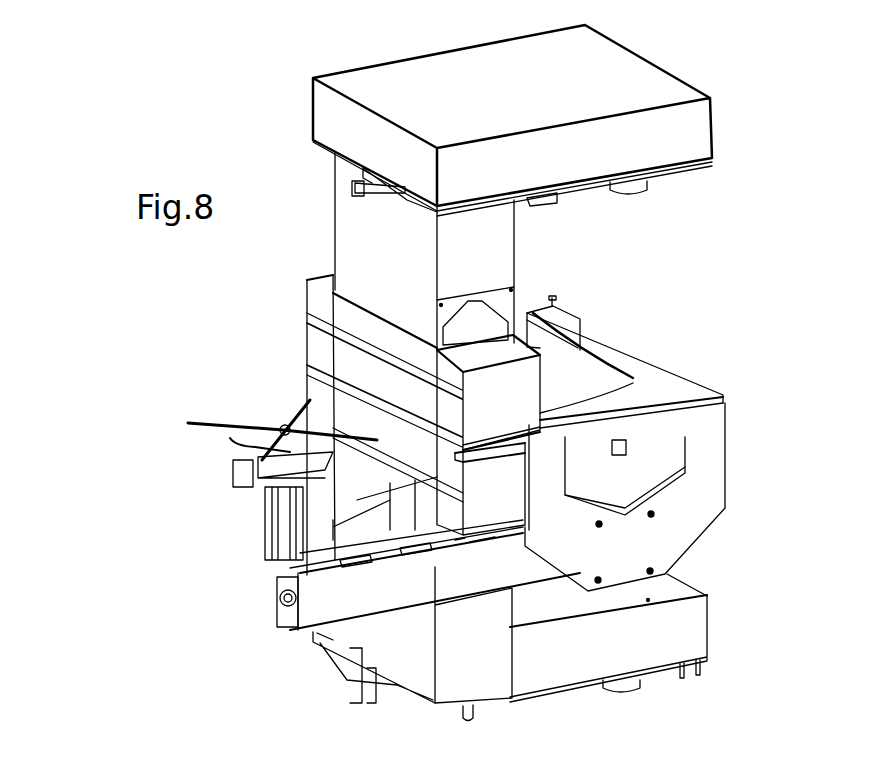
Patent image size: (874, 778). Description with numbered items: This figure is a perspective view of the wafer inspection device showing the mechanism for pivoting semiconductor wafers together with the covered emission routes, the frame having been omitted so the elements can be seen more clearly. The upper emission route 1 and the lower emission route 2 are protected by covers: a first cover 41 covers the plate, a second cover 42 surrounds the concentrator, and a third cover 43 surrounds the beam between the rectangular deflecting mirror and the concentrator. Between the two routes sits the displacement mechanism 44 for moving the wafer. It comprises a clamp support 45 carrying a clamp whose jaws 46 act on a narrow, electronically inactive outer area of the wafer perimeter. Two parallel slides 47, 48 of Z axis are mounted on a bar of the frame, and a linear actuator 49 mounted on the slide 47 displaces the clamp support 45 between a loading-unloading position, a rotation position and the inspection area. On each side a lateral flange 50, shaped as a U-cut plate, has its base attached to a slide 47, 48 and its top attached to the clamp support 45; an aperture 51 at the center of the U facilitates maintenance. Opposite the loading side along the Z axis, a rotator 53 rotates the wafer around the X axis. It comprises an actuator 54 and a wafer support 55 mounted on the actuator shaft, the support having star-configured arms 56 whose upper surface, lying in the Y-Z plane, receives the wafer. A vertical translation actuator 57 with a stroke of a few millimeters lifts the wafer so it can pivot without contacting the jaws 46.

The upper emission route 1 is at (723, 141).
The lower emission route 2 is at (712, 631).
The first cover 41 is at (585, 162).
The second cover 42 is at (492, 254).
The third cover 43 is at (515, 415).
The displacement mechanism 44 is at (727, 492).
The clamp support 45 is at (673, 387).
The jaws 46 is at (633, 380).
The slide 47 is at (287, 627).
The slide 48 is at (277, 570).
The linear actuator 49 is at (278, 600).
The lateral flange 50 is at (635, 557).
The aperture 51 is at (630, 485).
The rotator 53 is at (230, 492).
The actuator 54 is at (267, 533).
The wafer support 55 is at (283, 418).
The arms 56 is at (198, 418).
The vertical translation actuator 57 is at (233, 452).